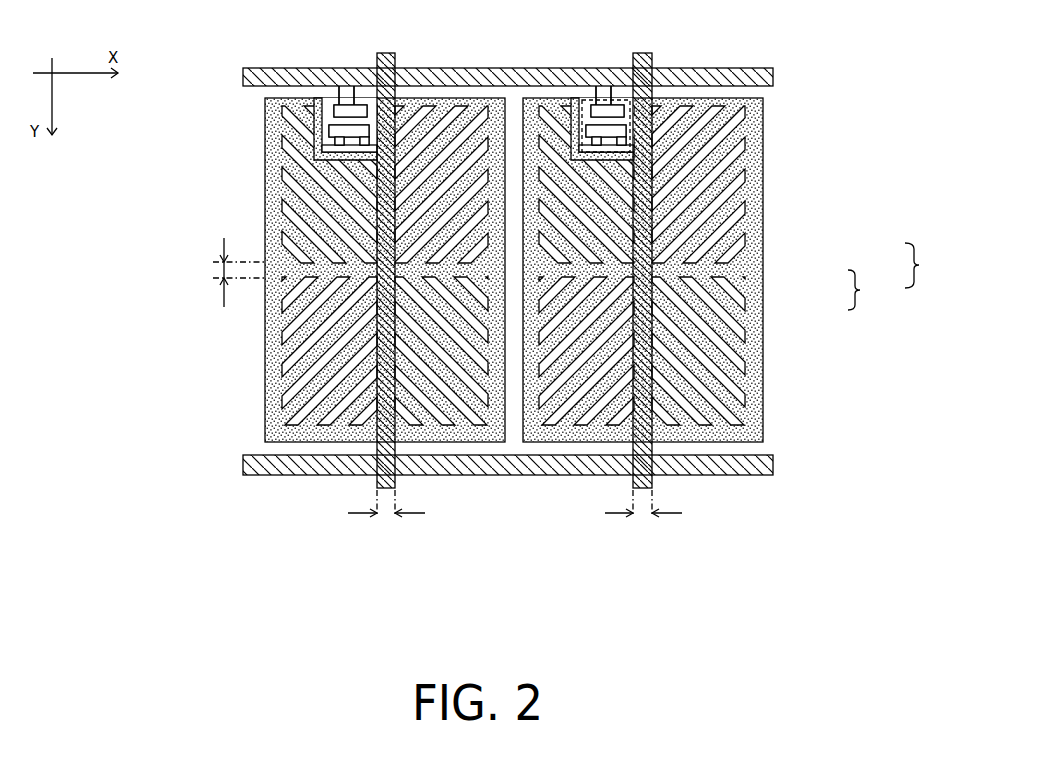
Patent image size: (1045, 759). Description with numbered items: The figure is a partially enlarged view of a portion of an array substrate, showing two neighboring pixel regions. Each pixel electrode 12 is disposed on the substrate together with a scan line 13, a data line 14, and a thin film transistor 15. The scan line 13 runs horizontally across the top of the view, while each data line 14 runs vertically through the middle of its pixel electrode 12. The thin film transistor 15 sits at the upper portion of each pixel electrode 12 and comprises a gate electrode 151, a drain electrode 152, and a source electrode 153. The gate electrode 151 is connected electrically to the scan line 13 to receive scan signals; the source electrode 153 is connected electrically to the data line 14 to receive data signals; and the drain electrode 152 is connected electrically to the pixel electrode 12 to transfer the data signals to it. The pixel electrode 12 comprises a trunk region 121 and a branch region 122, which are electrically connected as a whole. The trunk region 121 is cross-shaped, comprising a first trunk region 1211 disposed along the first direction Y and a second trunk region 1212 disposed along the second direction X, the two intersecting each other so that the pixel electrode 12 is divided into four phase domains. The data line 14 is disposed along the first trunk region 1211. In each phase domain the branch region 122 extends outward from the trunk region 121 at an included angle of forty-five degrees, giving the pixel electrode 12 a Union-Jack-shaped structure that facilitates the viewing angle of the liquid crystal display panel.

The pixel electrode 12 is at (559, 321).
The trunk region 121 is at (534, 391).
The first trunk region 1211 is at (594, 405).
The second trunk region 1212 is at (506, 277).
The branch region 122 is at (753, 175).
The scan line 13 is at (773, 77).
The data line 14 is at (645, 55).
The thin film transistor 15 is at (398, 104).
The gate electrode 151 is at (338, 103).
The drain electrode 152 is at (333, 137).
The source electrode 153 is at (373, 157).